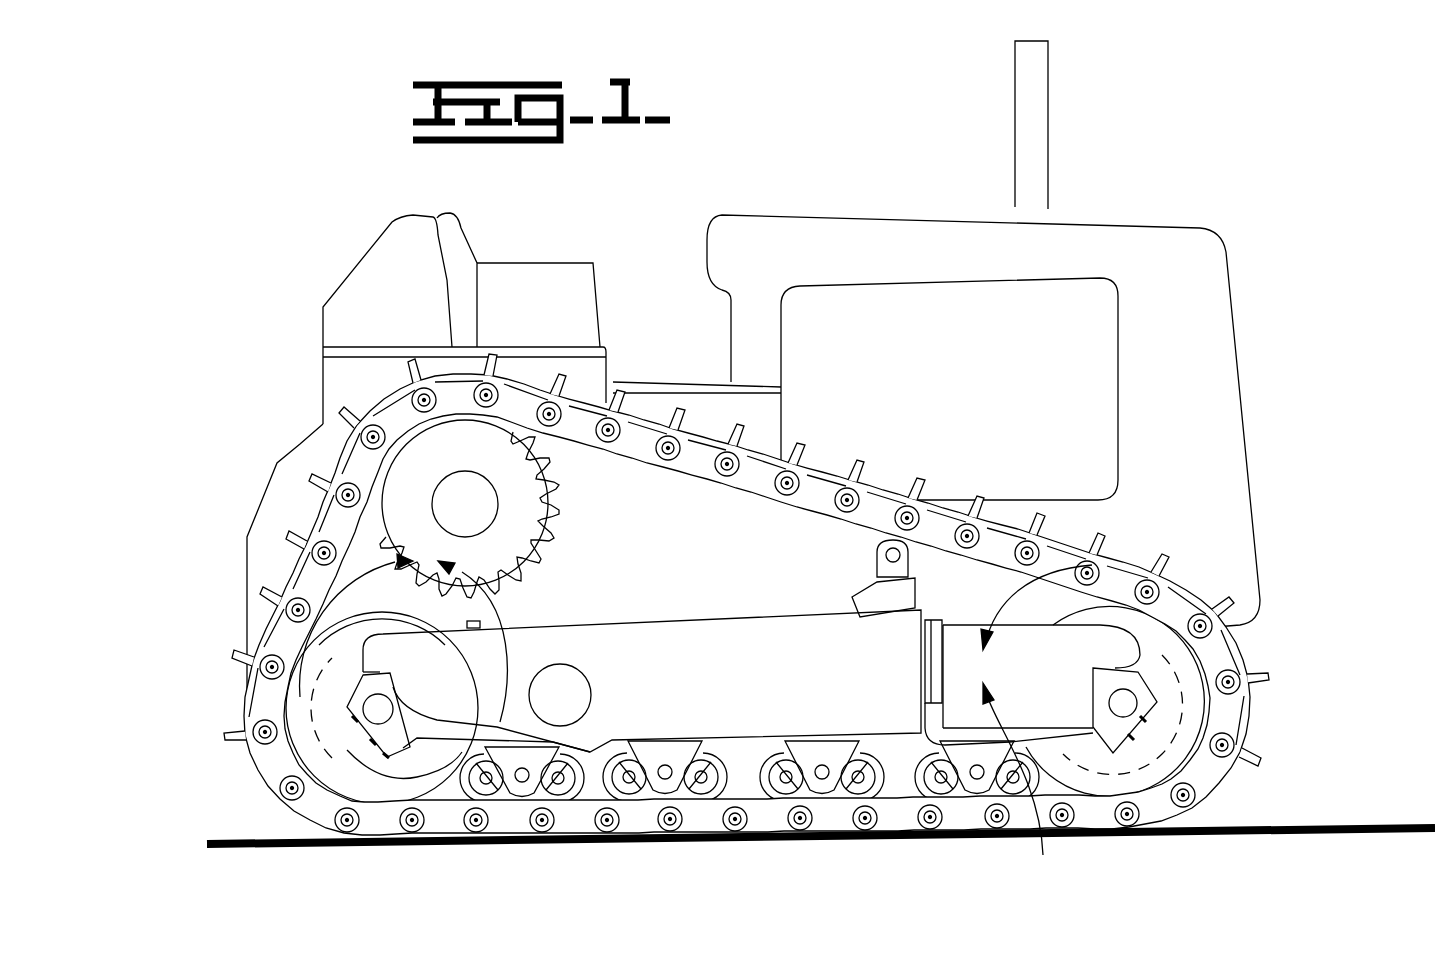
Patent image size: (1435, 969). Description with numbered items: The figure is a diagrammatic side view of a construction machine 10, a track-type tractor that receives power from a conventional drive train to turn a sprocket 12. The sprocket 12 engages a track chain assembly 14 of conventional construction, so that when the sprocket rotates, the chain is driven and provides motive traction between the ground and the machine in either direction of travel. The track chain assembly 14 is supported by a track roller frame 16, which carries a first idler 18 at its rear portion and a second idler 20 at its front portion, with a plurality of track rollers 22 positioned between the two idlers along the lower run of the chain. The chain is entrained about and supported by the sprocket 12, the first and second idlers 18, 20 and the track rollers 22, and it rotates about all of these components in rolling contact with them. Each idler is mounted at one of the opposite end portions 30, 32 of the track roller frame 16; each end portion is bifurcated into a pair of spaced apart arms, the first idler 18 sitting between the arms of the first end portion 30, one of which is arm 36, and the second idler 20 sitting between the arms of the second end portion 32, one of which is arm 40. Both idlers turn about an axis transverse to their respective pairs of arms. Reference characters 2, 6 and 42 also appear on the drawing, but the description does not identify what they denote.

The section line 2- 2 is at (404, 634).
The section line 6- 6 is at (1033, 710).
The construction machine 10 is at (1195, 198).
The sprocket 12 is at (507, 509).
The track chain assembly 14 is at (915, 472).
The track roller frame 16 is at (702, 665).
The first idler 18 is at (312, 745).
The second idler 20 is at (1195, 712).
The track rollers 22 is at (610, 733).
The first end portion 30 is at (448, 619).
The second end portion 32 is at (963, 644).
The arm 36 is at (405, 674).
The arm 40 is at (1030, 692).
The sprocket segment 42 is at (550, 540).